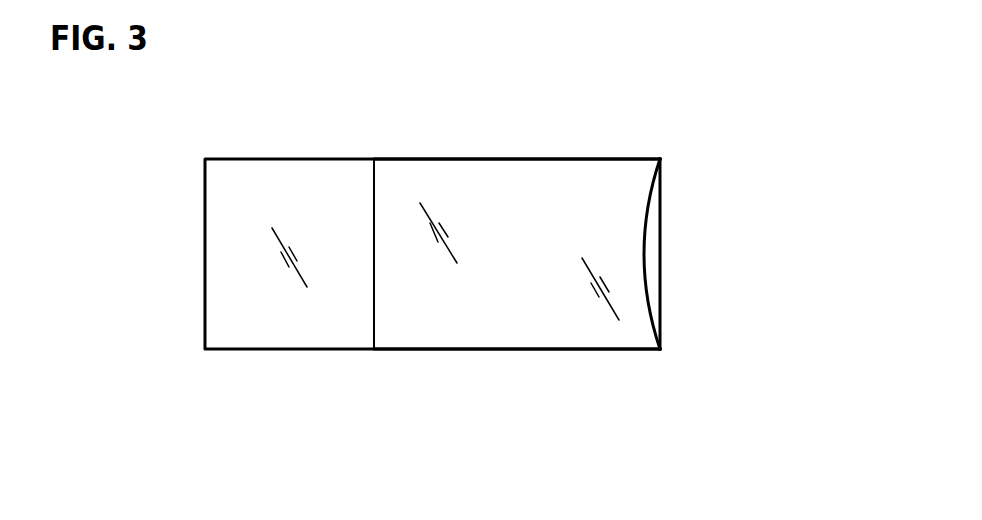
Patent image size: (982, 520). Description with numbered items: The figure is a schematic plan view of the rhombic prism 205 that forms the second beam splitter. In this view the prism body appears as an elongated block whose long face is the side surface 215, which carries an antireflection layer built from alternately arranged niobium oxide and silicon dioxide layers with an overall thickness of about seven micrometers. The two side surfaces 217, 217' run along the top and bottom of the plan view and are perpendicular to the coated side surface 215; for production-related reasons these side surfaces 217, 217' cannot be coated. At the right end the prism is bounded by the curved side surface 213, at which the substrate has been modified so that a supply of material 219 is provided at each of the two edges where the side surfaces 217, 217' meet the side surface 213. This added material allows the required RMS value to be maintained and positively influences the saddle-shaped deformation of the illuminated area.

The rhombic prism 205 is at (200, 249).
The side surface 213 is at (645, 250).
The side surface 215 is at (548, 269).
The side surface 217 is at (517, 111).
The side surface 217' is at (517, 402).
The supply of material 219 is at (664, 155).